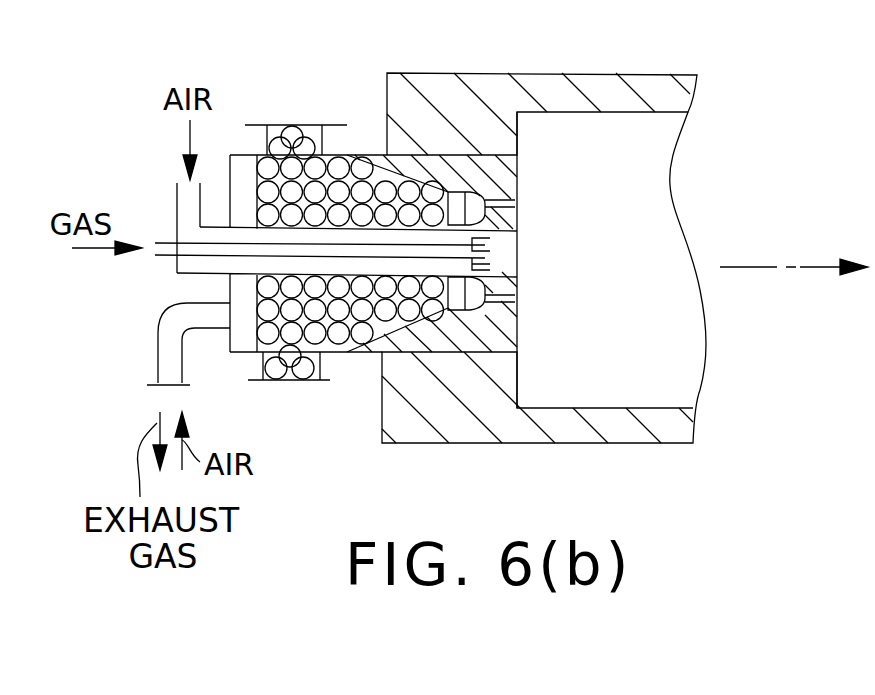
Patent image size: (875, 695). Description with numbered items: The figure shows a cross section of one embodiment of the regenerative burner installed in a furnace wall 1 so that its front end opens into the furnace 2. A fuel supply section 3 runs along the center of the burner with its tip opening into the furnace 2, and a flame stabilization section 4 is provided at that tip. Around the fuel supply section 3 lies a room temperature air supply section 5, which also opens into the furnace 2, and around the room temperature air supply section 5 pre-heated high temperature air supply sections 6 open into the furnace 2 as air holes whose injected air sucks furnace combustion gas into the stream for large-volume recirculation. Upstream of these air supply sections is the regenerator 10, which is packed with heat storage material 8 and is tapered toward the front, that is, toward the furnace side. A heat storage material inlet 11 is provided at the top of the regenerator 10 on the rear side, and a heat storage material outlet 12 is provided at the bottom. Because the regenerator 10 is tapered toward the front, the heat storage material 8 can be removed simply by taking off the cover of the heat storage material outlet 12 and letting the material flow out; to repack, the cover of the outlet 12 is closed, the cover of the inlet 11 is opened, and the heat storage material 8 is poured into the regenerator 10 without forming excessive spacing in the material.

The furnace wall 1 is at (597, 95).
The furnace 2 is at (618, 383).
The fuel supply section 3 is at (200, 243).
The flame stabilization section 4 is at (485, 253).
The room temperature air supply section 5 is at (262, 238).
The pre-heated high temperature air supply section 6 is at (507, 308).
The heat storage material 8 is at (315, 217).
The regenerator 10 is at (443, 172).
The heat storage material inlet 11 is at (277, 125).
The heat storage material outlet 12 is at (275, 380).